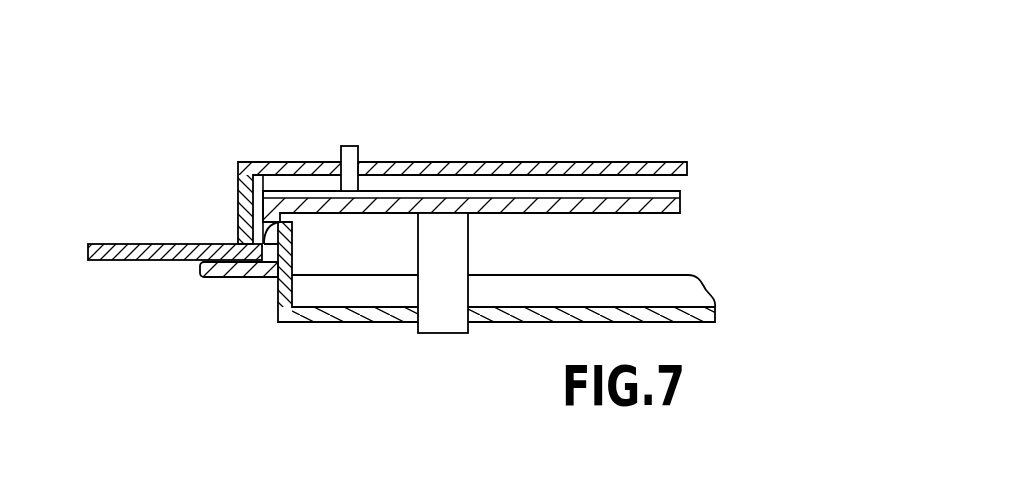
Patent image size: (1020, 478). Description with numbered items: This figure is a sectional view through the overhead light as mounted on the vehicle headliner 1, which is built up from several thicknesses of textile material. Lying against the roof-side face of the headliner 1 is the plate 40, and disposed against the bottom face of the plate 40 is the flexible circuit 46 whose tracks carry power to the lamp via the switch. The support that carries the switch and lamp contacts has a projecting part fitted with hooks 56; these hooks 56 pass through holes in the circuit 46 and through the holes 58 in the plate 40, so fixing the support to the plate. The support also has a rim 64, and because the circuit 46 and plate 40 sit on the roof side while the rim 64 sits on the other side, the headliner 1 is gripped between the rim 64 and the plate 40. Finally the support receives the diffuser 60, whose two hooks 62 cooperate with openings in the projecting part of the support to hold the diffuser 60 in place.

The headliner 1 is at (110, 243).
The plate 40 is at (577, 161).
The flexible circuit 46 is at (460, 191).
The hooks 56 is at (347, 146).
The holes 58 is at (375, 158).
The diffuser 60 is at (318, 323).
The hooks 62 is at (283, 227).
The rim 64 is at (227, 278).